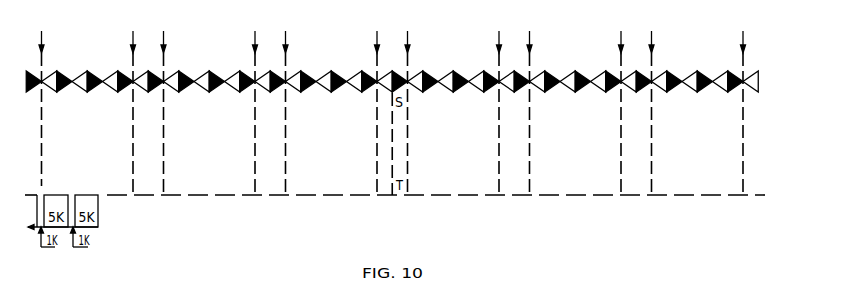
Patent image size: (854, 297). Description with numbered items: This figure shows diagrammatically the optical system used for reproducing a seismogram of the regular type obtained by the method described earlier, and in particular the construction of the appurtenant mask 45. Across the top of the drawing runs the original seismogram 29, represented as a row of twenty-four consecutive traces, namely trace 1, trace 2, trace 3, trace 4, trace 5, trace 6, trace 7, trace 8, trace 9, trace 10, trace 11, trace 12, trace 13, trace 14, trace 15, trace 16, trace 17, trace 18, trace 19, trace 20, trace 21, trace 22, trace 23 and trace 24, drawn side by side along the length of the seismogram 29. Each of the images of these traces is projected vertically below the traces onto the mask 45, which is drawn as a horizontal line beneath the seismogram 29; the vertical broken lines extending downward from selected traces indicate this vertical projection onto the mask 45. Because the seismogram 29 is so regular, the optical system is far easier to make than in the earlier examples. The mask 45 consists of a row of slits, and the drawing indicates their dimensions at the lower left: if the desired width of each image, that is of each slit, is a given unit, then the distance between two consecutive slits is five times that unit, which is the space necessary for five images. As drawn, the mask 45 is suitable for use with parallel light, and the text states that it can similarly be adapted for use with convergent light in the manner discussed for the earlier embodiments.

The trace 1 is at (41, 108).
The trace 2 is at (72, 74).
The trace 3 is at (102, 74).
The trace 4 is at (133, 113).
The trace 5 is at (163, 113).
The trace 6 is at (194, 74).
The trace 7 is at (224, 74).
The trace 8 is at (255, 113).
The trace 9 is at (285, 113).
The trace 10 is at (316, 74).
The trace 11 is at (346, 74).
The trace 12 is at (377, 113).
The trace 13 is at (407, 113).
The trace 14 is at (438, 74).
The trace 15 is at (468, 74).
The trace 16 is at (499, 113).
The trace 17 is at (529, 113).
The trace 18 is at (560, 74).
The trace 19 is at (590, 74).
The trace 20 is at (621, 113).
The trace 21 is at (651, 113).
The trace 22 is at (682, 74).
The trace 23 is at (712, 74).
The trace 24 is at (742, 113).
The original seismogram 29 is at (758, 85).
The mask 45 is at (765, 195).